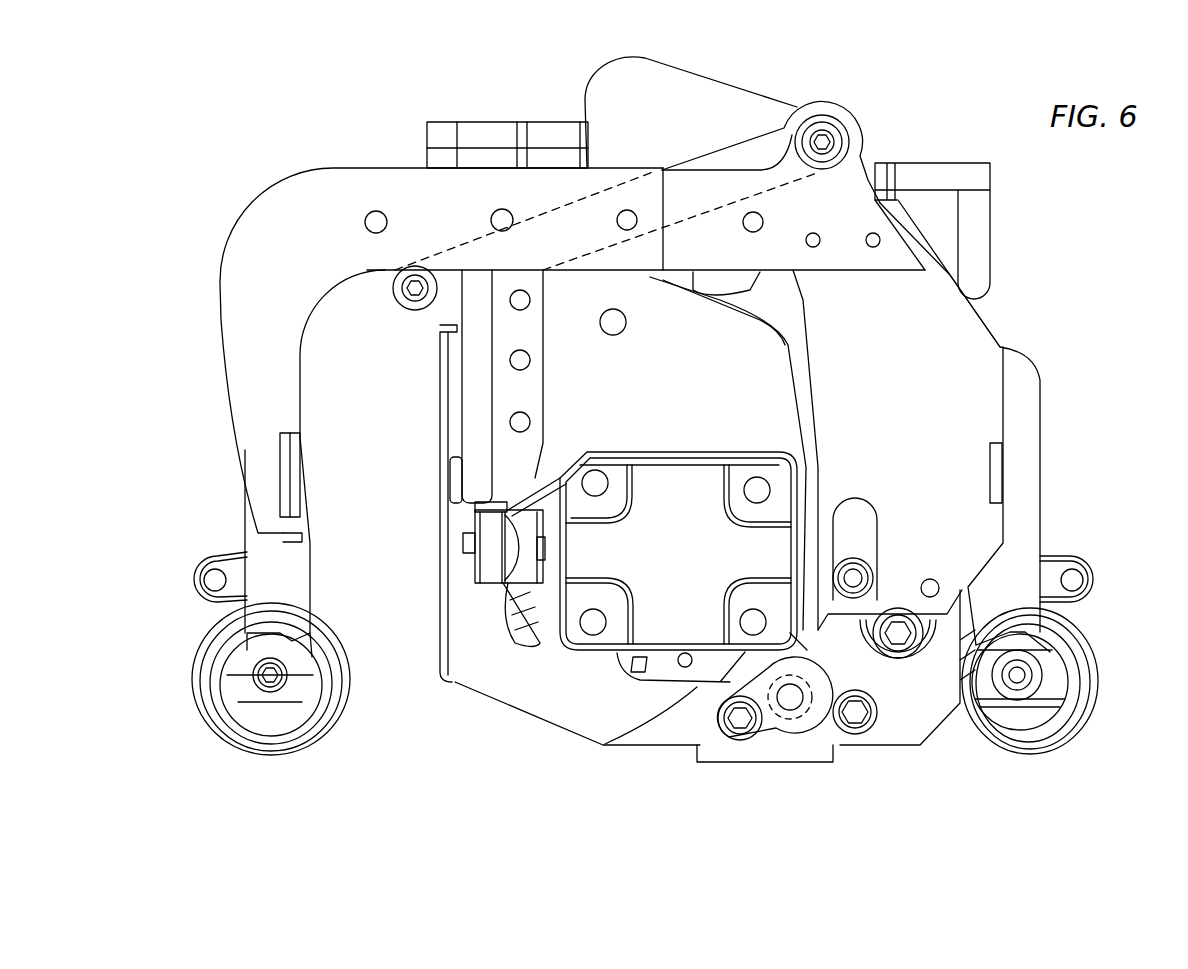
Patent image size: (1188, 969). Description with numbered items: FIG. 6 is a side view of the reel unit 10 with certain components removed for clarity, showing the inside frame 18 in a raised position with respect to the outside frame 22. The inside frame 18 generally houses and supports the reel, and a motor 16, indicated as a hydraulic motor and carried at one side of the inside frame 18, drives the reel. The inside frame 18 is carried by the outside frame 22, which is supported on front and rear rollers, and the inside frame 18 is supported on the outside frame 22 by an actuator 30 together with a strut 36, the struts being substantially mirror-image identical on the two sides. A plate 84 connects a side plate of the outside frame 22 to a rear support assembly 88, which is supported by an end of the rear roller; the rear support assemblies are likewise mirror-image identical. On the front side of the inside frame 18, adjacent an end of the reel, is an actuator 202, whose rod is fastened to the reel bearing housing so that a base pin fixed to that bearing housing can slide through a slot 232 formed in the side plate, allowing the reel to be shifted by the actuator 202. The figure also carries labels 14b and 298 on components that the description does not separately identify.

The unit 10 is at (1060, 227).
The outside frame 22 is at (224, 336).
The actuator 202 is at (490, 120).
The strut 36 is at (732, 147).
The actuator 30 is at (937, 162).
The rear support assembly 88 is at (1033, 493).
The plate 84 is at (997, 467).
The inside frame 18 is at (440, 589).
The motor 16 is at (663, 620).
The slot 232 is at (540, 640).
The bracket 14b is at (710, 683).
The bolt 298 is at (820, 735).